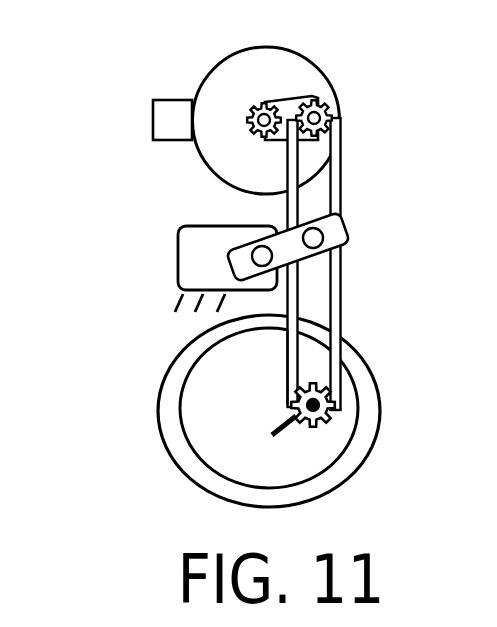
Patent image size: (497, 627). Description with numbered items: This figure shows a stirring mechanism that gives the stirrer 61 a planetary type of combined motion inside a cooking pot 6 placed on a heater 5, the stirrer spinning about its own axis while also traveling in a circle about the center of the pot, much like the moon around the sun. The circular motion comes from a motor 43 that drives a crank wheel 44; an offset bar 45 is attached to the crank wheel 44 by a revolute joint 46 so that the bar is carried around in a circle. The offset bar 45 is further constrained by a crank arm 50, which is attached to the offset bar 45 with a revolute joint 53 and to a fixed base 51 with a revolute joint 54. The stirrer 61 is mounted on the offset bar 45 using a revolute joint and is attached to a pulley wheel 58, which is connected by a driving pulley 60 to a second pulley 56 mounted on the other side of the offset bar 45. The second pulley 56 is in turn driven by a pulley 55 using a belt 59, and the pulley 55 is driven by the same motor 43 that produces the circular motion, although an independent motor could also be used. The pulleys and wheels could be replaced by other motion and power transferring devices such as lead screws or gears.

The heater 5 is at (187, 477).
The cooking pot 6 is at (350, 404).
The motor 43 is at (178, 122).
The crank wheel 44 is at (317, 68).
The offset bar 45 is at (313, 282).
The revolute joint 46 is at (322, 122).
The crank arm 50 is at (233, 268).
The fixed base 51 is at (197, 270).
The revolute joint 53 is at (330, 230).
The revolute joint 54 is at (253, 248).
The pulley 55 is at (251, 108).
The second pulley 56 is at (335, 103).
The pulley wheel 58 is at (335, 418).
The belt 59 is at (282, 102).
The driving pulley 60 is at (287, 380).
The stirrer 61 is at (280, 428).